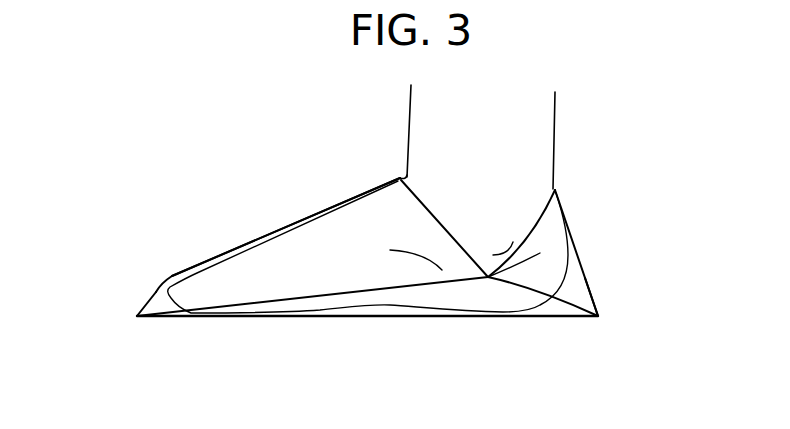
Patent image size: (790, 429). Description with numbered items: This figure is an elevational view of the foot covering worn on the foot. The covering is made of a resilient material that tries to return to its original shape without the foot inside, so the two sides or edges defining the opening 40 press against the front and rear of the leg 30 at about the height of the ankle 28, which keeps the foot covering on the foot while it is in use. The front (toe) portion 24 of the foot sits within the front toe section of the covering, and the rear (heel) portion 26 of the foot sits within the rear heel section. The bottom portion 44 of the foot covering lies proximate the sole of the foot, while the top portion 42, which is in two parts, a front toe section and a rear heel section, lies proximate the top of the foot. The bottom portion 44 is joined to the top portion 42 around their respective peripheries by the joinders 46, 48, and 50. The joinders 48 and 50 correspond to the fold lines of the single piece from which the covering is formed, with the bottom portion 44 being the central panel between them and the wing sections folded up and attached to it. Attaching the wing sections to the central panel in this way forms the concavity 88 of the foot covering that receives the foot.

The front (toe) portion 24 is at (248, 272).
The rear (heel) portion 26 is at (552, 262).
The ankle 28 is at (512, 170).
The leg 30 is at (448, 118).
The opening 40 is at (422, 203).
The top portion 42 is at (305, 213).
The bottom portion 44 is at (333, 318).
The joinder 46 is at (428, 288).
The joinder 48 is at (133, 314).
The joinder 50 is at (598, 316).
The concavity 88 is at (160, 297).